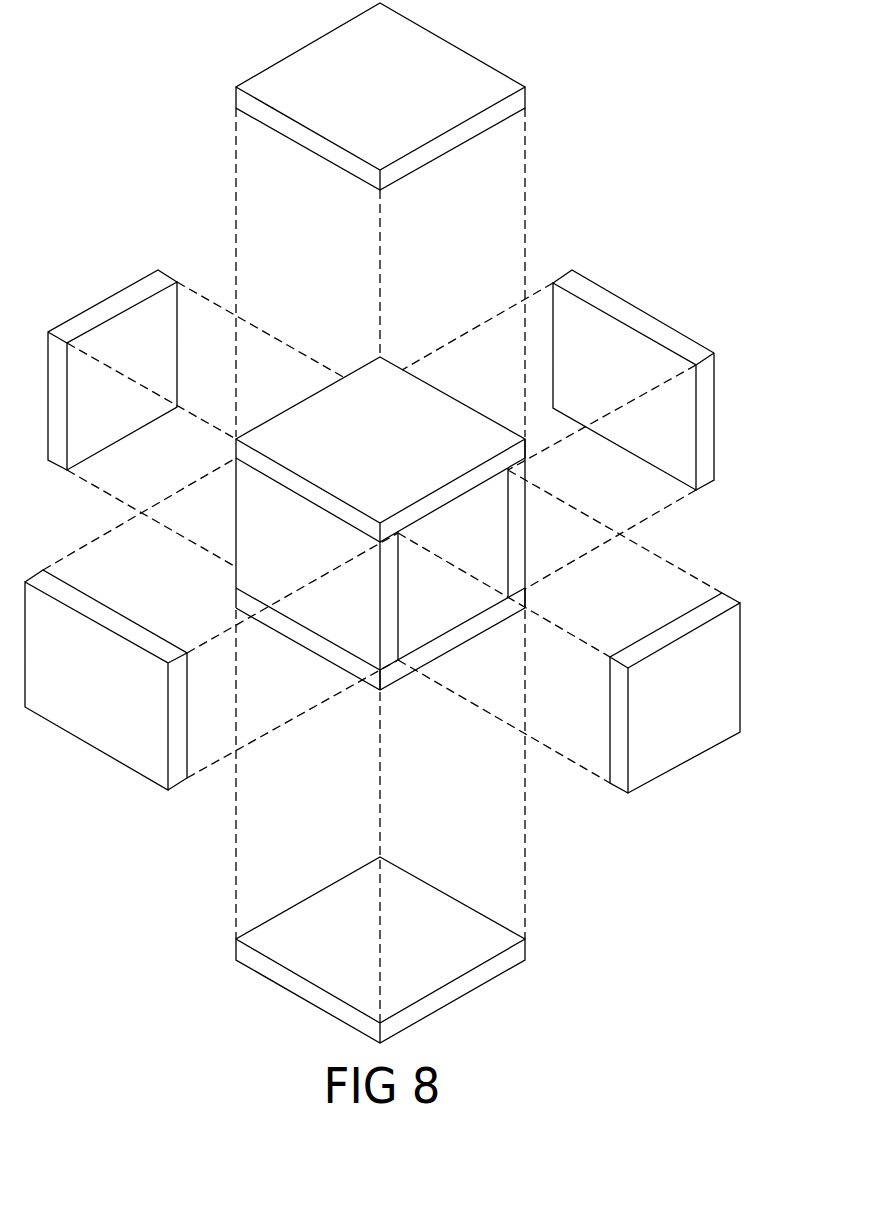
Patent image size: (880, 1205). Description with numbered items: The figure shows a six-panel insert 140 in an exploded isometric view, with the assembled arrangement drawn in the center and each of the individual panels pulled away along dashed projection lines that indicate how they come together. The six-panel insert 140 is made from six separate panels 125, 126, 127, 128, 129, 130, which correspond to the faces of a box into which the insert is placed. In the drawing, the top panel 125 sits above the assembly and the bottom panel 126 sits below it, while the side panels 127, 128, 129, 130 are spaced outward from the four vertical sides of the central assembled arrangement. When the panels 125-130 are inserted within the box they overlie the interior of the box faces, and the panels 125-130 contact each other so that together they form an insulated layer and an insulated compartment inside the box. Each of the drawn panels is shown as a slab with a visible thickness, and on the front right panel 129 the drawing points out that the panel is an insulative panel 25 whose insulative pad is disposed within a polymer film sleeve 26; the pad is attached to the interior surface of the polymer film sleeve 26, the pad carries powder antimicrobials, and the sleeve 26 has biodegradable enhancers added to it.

The panel 125 is at (361, 100).
The panel 126 is at (300, 953).
The panel 127 is at (120, 700).
The panel 128 is at (584, 376).
The panel 129 is at (576, 668).
The panel 130 is at (84, 418).
The six-panel insert 140 is at (728, 507).
The insulative panel 25 is at (702, 738).
The polymer film sleeve 26 is at (665, 758).